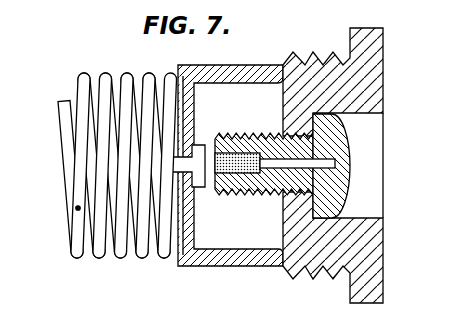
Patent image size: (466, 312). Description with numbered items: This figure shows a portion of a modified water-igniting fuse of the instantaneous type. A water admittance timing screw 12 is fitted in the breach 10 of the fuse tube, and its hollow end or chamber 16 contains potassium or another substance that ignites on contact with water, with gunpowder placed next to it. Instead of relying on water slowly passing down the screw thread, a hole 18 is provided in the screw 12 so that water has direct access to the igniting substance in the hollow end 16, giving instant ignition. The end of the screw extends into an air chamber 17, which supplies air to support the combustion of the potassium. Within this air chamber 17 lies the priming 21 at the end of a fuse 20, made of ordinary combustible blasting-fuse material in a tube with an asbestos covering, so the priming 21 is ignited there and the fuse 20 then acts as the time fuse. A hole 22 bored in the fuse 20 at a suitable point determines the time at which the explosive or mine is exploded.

The breach 10 is at (335, 85).
The water admittance timing screw 12 is at (333, 140).
The hollow end or chamber of the screw 16 is at (233, 138).
The air chamber 17 is at (228, 92).
The hole 18 is at (333, 163).
The fuse 20 is at (80, 75).
The priming 21 is at (197, 180).
The hole 22 is at (77, 209).